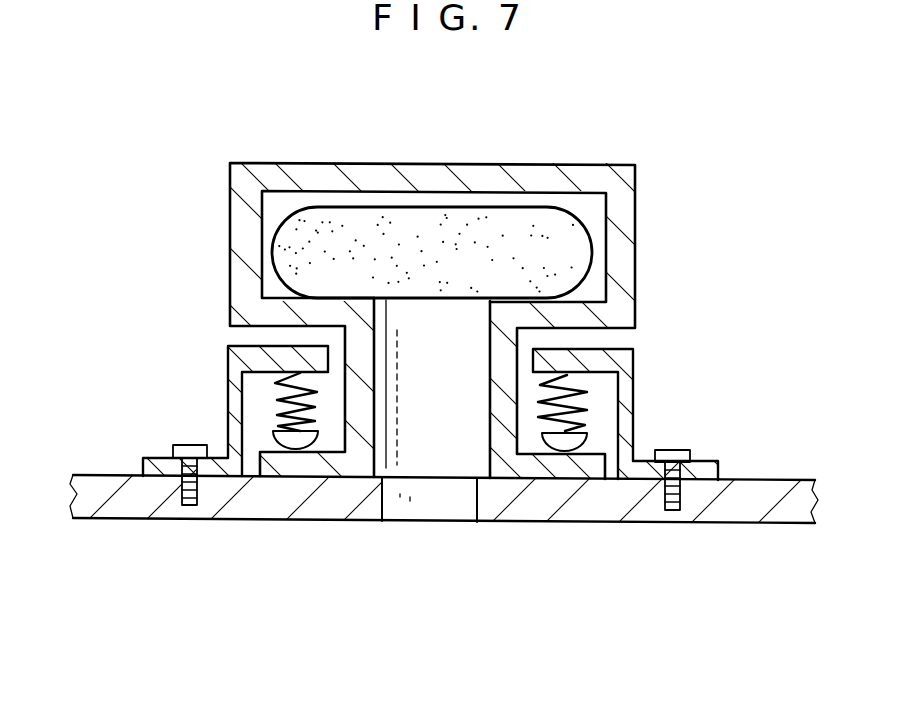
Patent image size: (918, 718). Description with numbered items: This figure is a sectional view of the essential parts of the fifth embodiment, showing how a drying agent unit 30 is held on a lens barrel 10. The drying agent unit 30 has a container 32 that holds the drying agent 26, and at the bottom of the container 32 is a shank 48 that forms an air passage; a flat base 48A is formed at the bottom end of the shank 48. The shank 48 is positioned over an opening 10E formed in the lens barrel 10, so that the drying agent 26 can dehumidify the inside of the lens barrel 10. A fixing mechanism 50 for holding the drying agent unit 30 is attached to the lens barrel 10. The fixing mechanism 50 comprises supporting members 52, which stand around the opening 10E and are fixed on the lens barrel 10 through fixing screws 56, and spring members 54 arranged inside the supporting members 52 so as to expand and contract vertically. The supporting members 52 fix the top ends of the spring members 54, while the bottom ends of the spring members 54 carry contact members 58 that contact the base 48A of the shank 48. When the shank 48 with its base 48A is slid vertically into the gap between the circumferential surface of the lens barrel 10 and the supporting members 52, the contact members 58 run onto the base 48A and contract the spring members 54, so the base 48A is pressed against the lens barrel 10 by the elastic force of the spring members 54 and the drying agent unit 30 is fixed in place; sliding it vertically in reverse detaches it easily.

The lens barrel 10 is at (103, 488).
The opening 10E is at (383, 500).
The drying agent 26 is at (373, 214).
The drying agent unit 30 is at (539, 151).
The container 32 is at (622, 212).
The shank 48 is at (490, 450).
The flat base 48A is at (597, 467).
The fixing mechanism 50 is at (660, 376).
The supporting members 52 is at (227, 371).
The spring members 54 is at (277, 403).
The fixing screws 56 is at (185, 443).
The contact members 58 is at (283, 445).